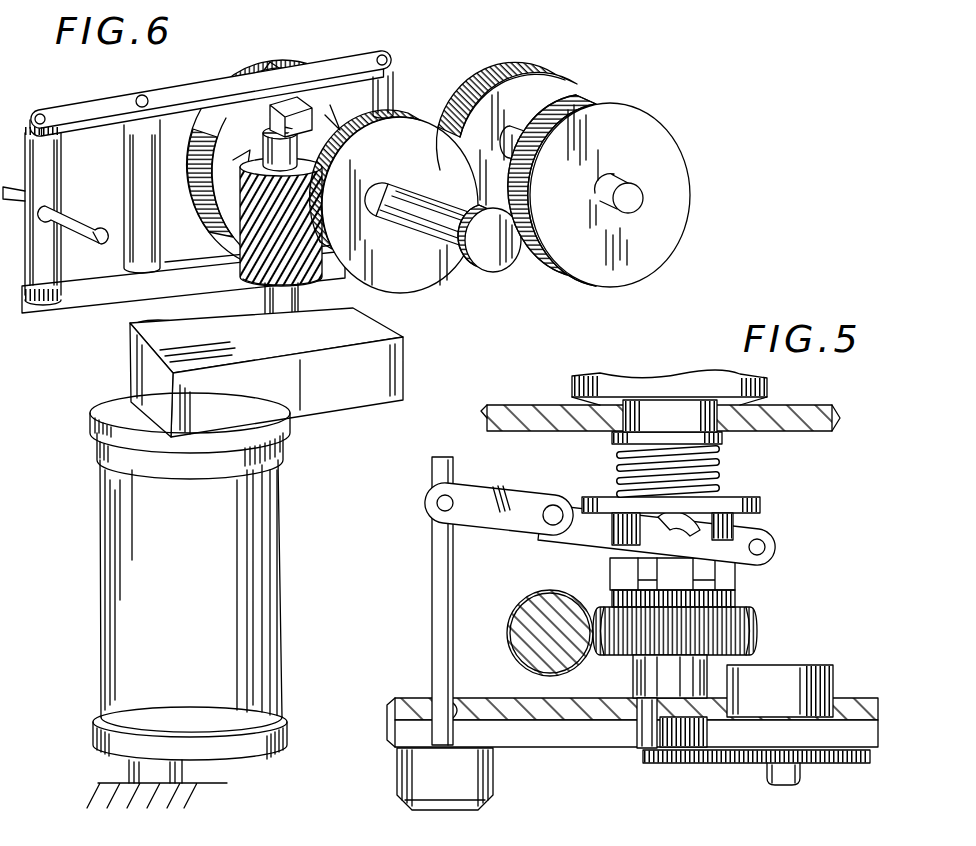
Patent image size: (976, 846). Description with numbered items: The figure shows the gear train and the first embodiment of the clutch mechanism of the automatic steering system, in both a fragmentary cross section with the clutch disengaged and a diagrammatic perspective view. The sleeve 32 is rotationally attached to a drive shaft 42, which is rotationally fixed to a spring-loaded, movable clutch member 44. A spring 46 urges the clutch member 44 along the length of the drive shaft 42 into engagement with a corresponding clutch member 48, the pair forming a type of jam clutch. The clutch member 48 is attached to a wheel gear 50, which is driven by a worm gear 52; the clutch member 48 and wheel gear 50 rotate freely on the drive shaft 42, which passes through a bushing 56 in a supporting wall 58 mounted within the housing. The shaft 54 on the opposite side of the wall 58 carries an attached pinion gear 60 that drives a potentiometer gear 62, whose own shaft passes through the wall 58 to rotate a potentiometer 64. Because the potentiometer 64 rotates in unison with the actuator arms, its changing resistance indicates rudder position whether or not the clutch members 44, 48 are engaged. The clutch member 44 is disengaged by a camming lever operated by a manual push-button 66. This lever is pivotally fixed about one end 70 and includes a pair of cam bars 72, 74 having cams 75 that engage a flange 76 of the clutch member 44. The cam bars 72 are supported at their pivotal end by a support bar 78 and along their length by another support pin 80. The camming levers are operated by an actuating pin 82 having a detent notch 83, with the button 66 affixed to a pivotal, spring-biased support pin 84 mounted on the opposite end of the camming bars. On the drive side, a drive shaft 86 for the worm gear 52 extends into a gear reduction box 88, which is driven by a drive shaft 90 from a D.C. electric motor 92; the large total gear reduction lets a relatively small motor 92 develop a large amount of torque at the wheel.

In FIG. 5, the sleeve 32 is at (768, 381).
In FIG. 6, the drive shaft 42 is at (438, 244).
In FIG. 5, the drive shaft 42 is at (725, 428).
In FIG. 6, the movable clutch member 44 is at (286, 68).
In FIG. 5, the movable clutch member 44 is at (770, 531).
In FIG. 5, the spring 46 is at (724, 474).
In FIG. 6, the clutch member 48 is at (330, 186).
In FIG. 5, the clutch member 48 is at (738, 590).
In FIG. 6, the wheel gear 50 is at (405, 113).
In FIG. 5, the wheel gear 50 is at (758, 622).
In FIG. 6, the worm gear 52 is at (236, 287).
In FIG. 5, the worm gear 52 is at (510, 655).
In FIG. 5, the shaft 54 is at (632, 678).
In FIG. 5, the bushing 56 is at (645, 725).
In FIG. 5, the supporting wall 58 is at (848, 698).
In FIG. 6, the pinion gear 60 is at (494, 270).
In FIG. 5, the pinion gear 60 is at (650, 766).
In FIG. 6, the potentiometer gear 62 is at (604, 276).
In FIG. 5, the potentiometer gear 62 is at (842, 765).
In FIG. 6, the potentiometer 64 is at (562, 84).
In FIG. 5, the potentiometer 64 is at (824, 666).
In FIG. 5, the push-button 66 is at (495, 780).
In FIG. 5, the end 70 is at (766, 549).
In FIG. 6, the cam bar 72 is at (110, 96).
In FIG. 5, the cam bar 72 is at (530, 495).
In FIG. 6, the cam bar 74 is at (97, 302).
In FIG. 6, the cams 75 is at (272, 64).
In FIG. 5, the cams 75 is at (692, 538).
In FIG. 5, the flange 76 is at (762, 510).
In FIG. 6, the support bar 78 is at (397, 92).
In FIG. 6, the support pin 80 is at (161, 207).
In FIG. 6, the actuating pin 82 is at (79, 207).
In FIG. 5, the actuating pin 82 is at (431, 608).
In FIG. 5, the detent notch 83 is at (450, 712).
In FIG. 6, the support pin 84 is at (26, 142).
In FIG. 6, the drive shaft 86 is at (264, 306).
In FIG. 6, the gear reduction box 88 is at (308, 408).
In FIG. 6, the drive shaft 90 is at (165, 305).
In FIG. 6, the D.C. electric motor 92 is at (265, 548).